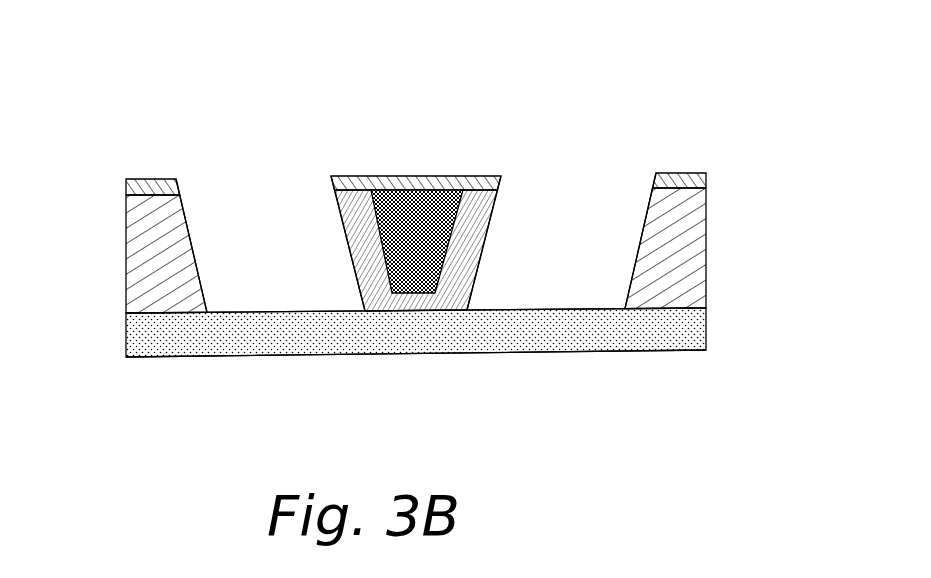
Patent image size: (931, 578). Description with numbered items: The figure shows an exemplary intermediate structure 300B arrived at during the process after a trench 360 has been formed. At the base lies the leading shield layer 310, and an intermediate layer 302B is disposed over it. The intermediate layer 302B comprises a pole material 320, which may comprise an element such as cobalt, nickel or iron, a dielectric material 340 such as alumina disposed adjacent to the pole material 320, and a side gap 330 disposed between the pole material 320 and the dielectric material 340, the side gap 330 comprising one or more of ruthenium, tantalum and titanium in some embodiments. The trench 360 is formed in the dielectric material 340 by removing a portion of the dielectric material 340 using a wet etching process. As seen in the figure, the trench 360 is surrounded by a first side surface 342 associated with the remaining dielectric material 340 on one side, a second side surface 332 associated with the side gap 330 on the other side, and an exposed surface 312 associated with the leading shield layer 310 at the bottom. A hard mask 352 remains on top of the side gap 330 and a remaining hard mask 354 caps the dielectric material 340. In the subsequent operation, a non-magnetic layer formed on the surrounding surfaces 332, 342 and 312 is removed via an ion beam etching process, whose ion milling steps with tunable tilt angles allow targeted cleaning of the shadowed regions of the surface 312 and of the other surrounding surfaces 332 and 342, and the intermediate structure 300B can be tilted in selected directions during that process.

The intermediate structure 300B is at (203, 39).
The intermediate layer 302B is at (122, 195).
The leading shield layer 310 is at (707, 322).
The exposed surface 312 is at (247, 313).
The pole material 320 is at (420, 190).
The side gap 330 is at (338, 205).
The second side surface 332 is at (343, 226).
The dielectric material 340 is at (707, 235).
The first side surface 342 is at (198, 272).
The hard mask 352 is at (468, 176).
The remaining hard mask 354 is at (707, 182).
The trench 360 is at (204, 174).